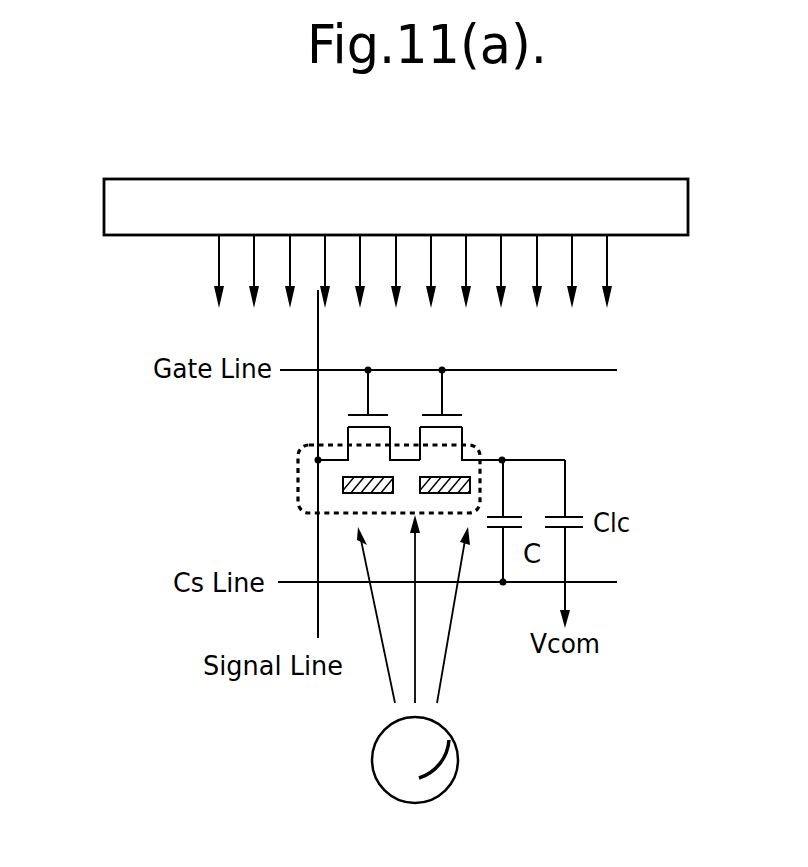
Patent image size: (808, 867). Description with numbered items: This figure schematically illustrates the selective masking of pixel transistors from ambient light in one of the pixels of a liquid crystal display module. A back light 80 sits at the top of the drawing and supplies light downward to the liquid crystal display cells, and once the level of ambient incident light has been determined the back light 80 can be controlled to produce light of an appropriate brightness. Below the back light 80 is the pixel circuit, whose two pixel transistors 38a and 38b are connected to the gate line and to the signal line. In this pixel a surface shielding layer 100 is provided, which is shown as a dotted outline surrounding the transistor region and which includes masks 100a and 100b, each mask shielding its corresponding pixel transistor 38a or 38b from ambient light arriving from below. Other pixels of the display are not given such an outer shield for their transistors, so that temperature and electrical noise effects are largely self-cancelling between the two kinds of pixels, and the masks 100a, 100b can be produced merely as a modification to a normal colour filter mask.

The back light 80 is at (557, 187).
The pixel transistor 38a is at (348, 418).
The pixel transistor 38b is at (458, 418).
The surface shielding layer 100 is at (285, 465).
The mask 100a is at (343, 480).
The mask 100b is at (470, 484).